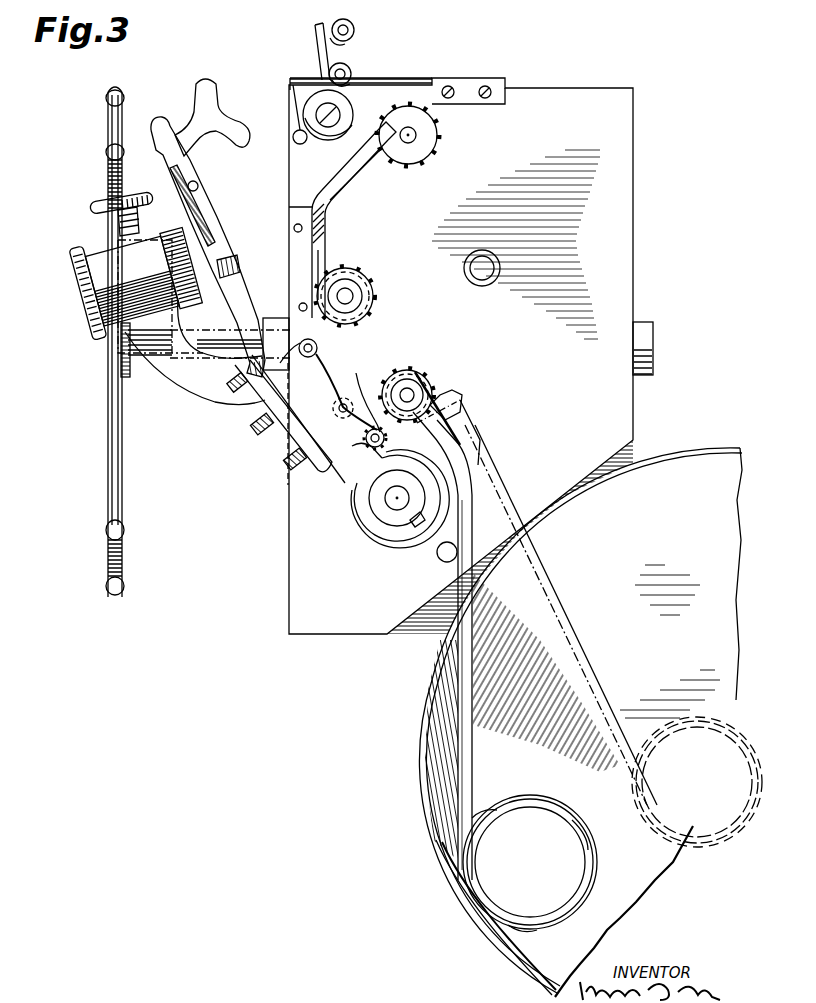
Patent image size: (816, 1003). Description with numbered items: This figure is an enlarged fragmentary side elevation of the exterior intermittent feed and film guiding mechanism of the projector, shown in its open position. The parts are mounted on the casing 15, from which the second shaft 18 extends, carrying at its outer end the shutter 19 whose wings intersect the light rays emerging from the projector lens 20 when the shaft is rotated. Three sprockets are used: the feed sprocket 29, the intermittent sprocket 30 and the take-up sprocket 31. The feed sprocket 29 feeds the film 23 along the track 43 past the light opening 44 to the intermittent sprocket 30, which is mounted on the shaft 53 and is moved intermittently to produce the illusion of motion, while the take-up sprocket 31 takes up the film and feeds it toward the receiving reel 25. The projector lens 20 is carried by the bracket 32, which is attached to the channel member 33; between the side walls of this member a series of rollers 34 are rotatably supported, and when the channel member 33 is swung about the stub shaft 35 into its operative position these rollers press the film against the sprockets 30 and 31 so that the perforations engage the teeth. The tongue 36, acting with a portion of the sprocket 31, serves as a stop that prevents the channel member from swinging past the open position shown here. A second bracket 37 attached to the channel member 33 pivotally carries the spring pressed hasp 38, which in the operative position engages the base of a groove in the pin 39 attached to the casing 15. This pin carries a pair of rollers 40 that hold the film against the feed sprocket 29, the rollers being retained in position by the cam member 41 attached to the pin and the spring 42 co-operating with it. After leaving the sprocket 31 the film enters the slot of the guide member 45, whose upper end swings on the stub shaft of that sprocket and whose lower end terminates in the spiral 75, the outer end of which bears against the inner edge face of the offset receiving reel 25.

The casing 15 is at (470, 356).
The second shaft 18 is at (224, 342).
The shutter 19 is at (124, 98).
The projector lens 20 is at (178, 238).
The film 23 is at (530, 975).
The receiving reel 25 is at (580, 722).
The feed sprocket 29 is at (428, 137).
The intermittent sprocket 30 is at (374, 297).
The take-up sprocket 31 is at (427, 375).
The bracket 32 is at (202, 404).
The channel member 33 is at (325, 404).
The rollers 34 is at (320, 348).
The stub shaft 35 is at (395, 507).
The tongue 36 is at (463, 398).
The second bracket 37 is at (245, 316).
The spring pressed hasp 38 is at (214, 110).
The pin 39 is at (345, 112).
The rollers 40 is at (347, 68).
The cam member 41 is at (304, 100).
The spring 42 is at (300, 78).
The track 43 is at (336, 193).
The light opening 44 is at (322, 225).
The guide member 45 is at (464, 486).
The shaft 53 is at (352, 290).
The spiral 75 is at (562, 812).